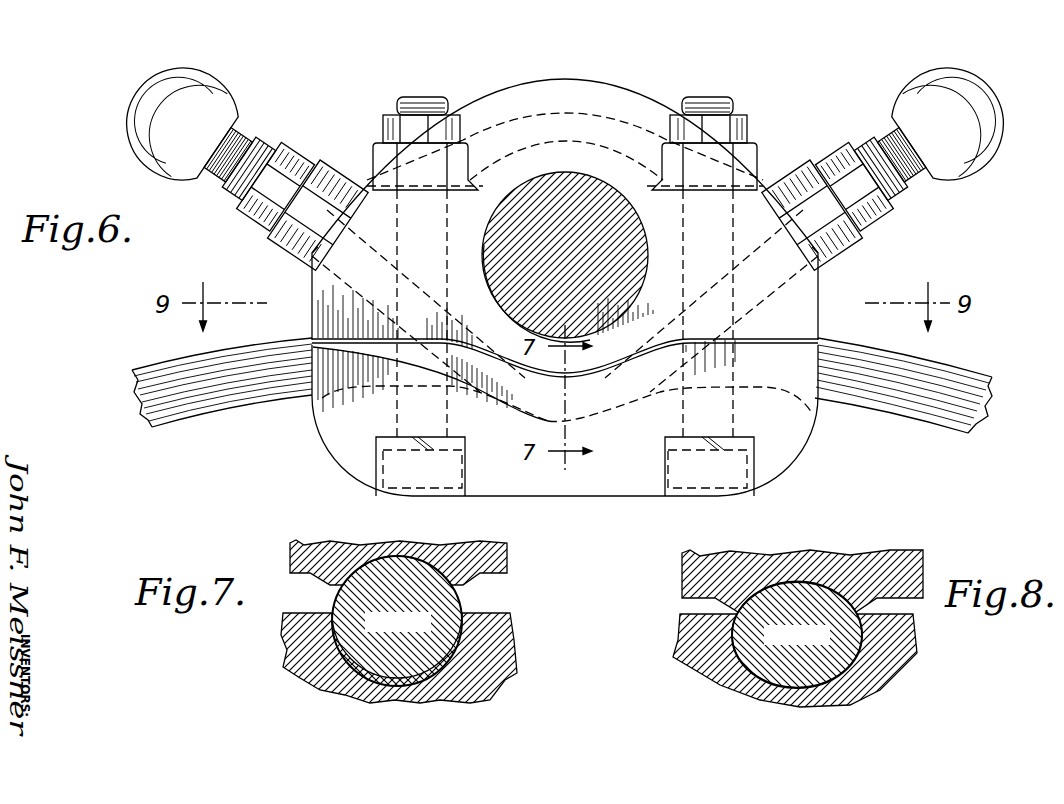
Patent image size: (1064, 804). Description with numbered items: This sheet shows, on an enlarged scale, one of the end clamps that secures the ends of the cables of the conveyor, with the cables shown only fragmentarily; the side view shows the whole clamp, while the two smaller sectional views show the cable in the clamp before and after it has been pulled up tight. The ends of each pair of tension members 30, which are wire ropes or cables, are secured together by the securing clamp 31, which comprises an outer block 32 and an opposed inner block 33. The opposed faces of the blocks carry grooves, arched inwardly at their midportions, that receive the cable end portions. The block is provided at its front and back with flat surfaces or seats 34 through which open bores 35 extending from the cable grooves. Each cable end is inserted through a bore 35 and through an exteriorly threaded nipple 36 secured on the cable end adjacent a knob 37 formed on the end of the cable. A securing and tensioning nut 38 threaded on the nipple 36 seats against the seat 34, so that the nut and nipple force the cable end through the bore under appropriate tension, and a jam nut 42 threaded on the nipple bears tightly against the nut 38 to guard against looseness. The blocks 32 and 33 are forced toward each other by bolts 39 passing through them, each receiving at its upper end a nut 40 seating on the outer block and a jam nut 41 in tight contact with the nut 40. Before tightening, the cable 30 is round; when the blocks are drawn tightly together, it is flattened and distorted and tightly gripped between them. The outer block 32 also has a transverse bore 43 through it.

In FIG. 6, the tension member 30 is at (231, 400).
In FIG. 7, the tension member 30 is at (452, 598).
In FIG. 8, the tension member 30 is at (772, 667).
In FIG. 6, the securing clamp 31 is at (647, 93).
In FIG. 6, the outer block 32 is at (533, 96).
In FIG. 7, the outer block 32 is at (316, 560).
In FIG. 8, the outer block 32 is at (836, 581).
In FIG. 6, the inner block 33 is at (537, 487).
In FIG. 7, the inner block 33 is at (318, 682).
In FIG. 8, the inner block 33 is at (887, 655).
In FIG. 6, the flat surfaces or seats 34 is at (283, 252).
In FIG. 6, the bores 35 is at (310, 302).
In FIG. 6, the exteriorly threaded nipple 36 is at (250, 137).
In FIG. 6, the knob 37 is at (197, 85).
In FIG. 6, the securing and tensioning nut 38 is at (327, 163).
In FIG. 6, the bolt 39 is at (417, 103).
In FIG. 6, the nut 40 is at (749, 158).
In FIG. 6, the jam nut 41 is at (737, 125).
In FIG. 6, the jam nut 42 is at (290, 137).
In FIG. 6, the transverse bore 43 is at (493, 233).